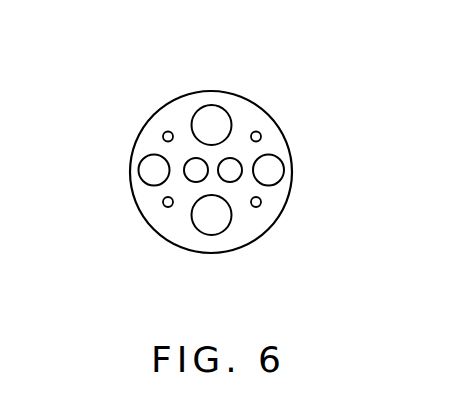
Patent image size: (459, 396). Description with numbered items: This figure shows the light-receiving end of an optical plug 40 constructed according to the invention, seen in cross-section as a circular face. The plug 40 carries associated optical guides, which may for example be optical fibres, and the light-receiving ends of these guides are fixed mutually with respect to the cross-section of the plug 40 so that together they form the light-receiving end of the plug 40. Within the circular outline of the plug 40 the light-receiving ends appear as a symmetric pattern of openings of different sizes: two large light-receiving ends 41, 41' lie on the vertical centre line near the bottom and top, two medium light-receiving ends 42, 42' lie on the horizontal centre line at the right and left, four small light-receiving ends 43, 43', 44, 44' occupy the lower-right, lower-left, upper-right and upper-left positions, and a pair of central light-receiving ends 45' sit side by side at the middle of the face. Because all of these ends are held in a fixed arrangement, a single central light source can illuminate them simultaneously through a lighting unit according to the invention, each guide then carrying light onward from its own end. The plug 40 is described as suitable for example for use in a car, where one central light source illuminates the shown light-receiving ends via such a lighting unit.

The optical plug 40 is at (210, 91).
The light-receiving end 41 is at (250, 257).
The light-receiving end 41' is at (268, 95).
The light-receiving end 42 is at (316, 170).
The light-receiving end 42' is at (115, 137).
The light-receiving end 43 is at (306, 222).
The light-receiving end 43' is at (109, 222).
The light-receiving end 44 is at (306, 123).
The light-receiving end 44' is at (140, 92).
The light-receiving end 45' is at (202, 109).